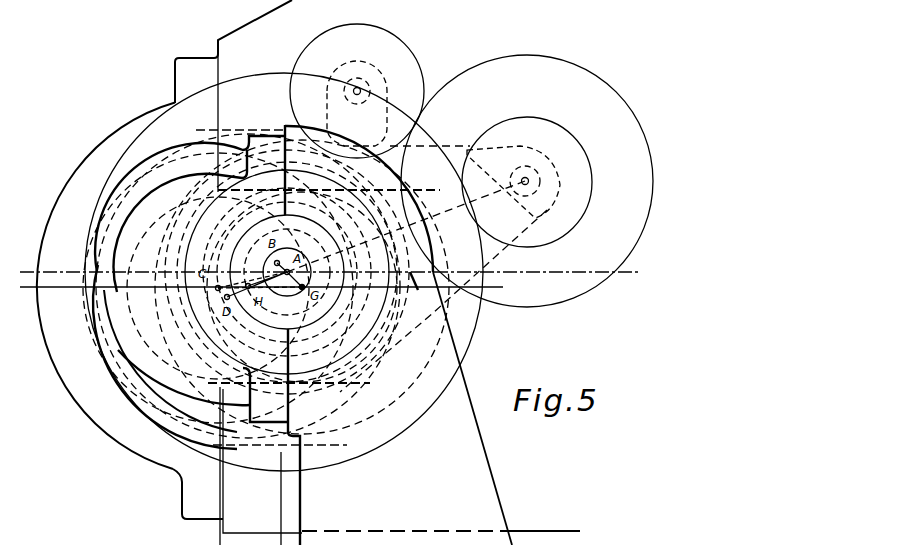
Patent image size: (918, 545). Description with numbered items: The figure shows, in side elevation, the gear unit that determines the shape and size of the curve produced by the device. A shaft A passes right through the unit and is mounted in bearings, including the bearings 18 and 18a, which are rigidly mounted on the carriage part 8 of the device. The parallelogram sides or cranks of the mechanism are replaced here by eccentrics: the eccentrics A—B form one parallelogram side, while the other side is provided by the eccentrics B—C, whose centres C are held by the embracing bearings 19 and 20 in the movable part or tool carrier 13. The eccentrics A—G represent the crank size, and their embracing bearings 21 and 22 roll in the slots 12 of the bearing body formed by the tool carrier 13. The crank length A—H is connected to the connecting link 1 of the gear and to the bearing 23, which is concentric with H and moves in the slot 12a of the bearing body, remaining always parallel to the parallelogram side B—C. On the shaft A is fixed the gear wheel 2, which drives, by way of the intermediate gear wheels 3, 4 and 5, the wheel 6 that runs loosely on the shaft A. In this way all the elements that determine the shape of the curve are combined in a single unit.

The connecting link 1 is at (432, 216).
The gear wheel 2 is at (422, 281).
The intermediate gear wheel 3 is at (378, 44).
The intermediate gear wheel 4 is at (538, 62).
The intermediate gear wheel 5 is at (580, 212).
The wheel 6 is at (468, 340).
The carriage part 8 is at (490, 492).
The slots 12 is at (246, 198).
The slot 12a is at (219, 131).
The tool carrier 13 is at (235, 42).
The bearing 18 is at (350, 318).
The bearing 18a is at (320, 318).
The embracing bearing 19 is at (98, 347).
The embracing bearing 20 is at (196, 291).
The embracing bearing 21 is at (370, 353).
The embracing bearing 22 is at (302, 287).
The bearing 23 is at (325, 424).